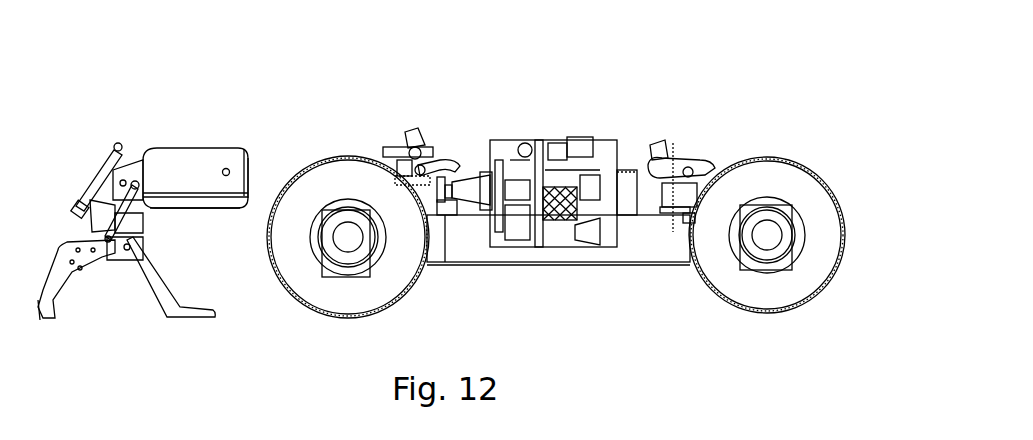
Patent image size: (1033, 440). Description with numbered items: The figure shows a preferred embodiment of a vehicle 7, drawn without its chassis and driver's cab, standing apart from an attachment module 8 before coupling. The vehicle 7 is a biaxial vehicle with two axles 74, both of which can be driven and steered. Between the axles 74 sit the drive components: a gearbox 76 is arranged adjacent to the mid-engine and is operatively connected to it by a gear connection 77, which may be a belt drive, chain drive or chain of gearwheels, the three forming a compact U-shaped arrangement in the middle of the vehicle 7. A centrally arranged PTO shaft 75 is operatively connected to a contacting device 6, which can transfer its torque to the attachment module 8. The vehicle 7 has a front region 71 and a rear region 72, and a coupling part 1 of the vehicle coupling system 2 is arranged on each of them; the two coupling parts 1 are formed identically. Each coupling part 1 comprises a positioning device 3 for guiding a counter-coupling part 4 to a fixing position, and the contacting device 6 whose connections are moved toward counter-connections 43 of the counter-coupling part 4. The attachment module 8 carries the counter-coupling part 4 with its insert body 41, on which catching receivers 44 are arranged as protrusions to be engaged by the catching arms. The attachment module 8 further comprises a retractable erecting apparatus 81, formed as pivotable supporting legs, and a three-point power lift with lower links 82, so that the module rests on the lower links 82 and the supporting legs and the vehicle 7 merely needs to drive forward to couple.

The coupling part 1 is at (420, 150).
The vehicle coupling system 2 is at (682, 150).
The positioning device 3 is at (447, 153).
The counter-coupling part 4 is at (180, 158).
The contacting device 6 is at (441, 228).
The vehicle 7 is at (605, 232).
The attachment module 8 is at (117, 176).
The insert body 41 is at (207, 200).
The counter-connections 43 is at (248, 160).
The catching receiver 44 is at (226, 170).
The front region 71 is at (717, 117).
The rear region 72 is at (360, 127).
The axle 74 is at (342, 245).
The PTO shaft 75 is at (472, 222).
The gearbox 76 is at (535, 233).
The gear connection 77 is at (616, 250).
The retractable erecting apparatus 81 is at (175, 308).
The lower links 82 is at (65, 277).